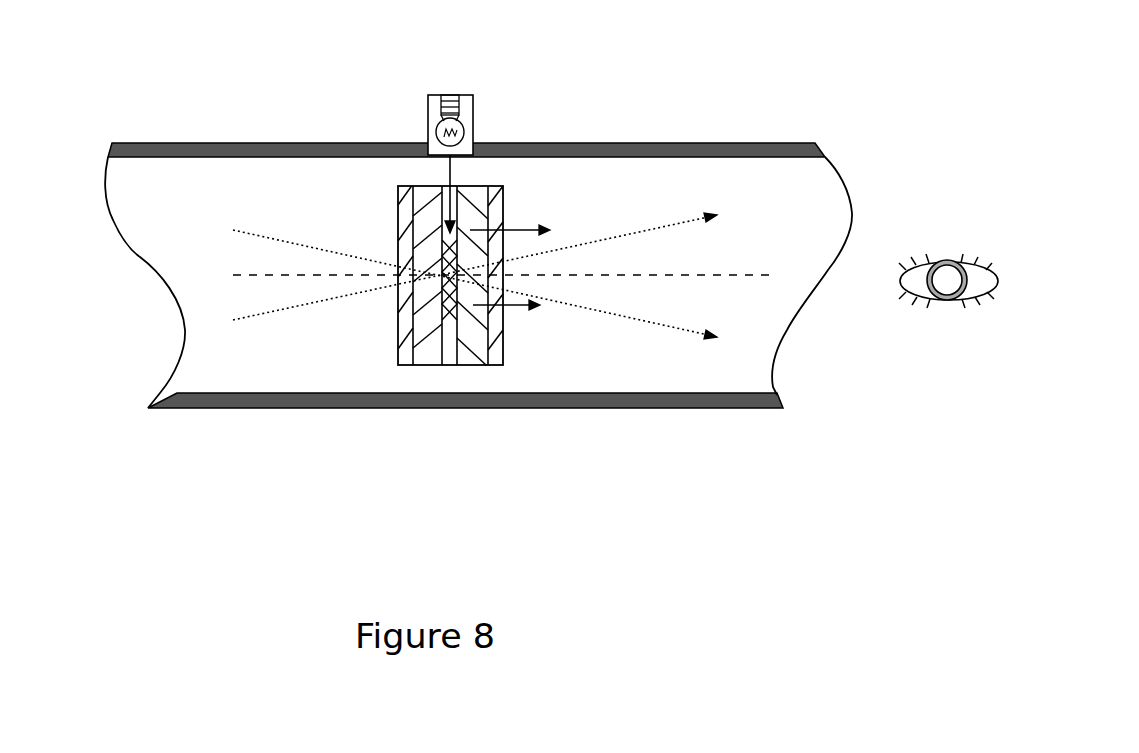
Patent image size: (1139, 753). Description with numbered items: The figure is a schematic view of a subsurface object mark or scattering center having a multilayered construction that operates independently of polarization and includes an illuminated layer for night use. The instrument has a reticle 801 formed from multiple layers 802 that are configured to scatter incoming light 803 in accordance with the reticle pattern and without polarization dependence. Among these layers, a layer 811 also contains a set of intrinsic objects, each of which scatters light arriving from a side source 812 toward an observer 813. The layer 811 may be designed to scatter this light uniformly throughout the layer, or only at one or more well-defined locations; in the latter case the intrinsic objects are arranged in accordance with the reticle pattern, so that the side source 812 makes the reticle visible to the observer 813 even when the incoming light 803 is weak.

The reticle 801 is at (345, 194).
The multiple layers 802 is at (425, 365).
The incoming light 803 is at (267, 238).
The layer 811 is at (450, 365).
The side source 812 is at (508, 118).
The observer 813 is at (940, 262).